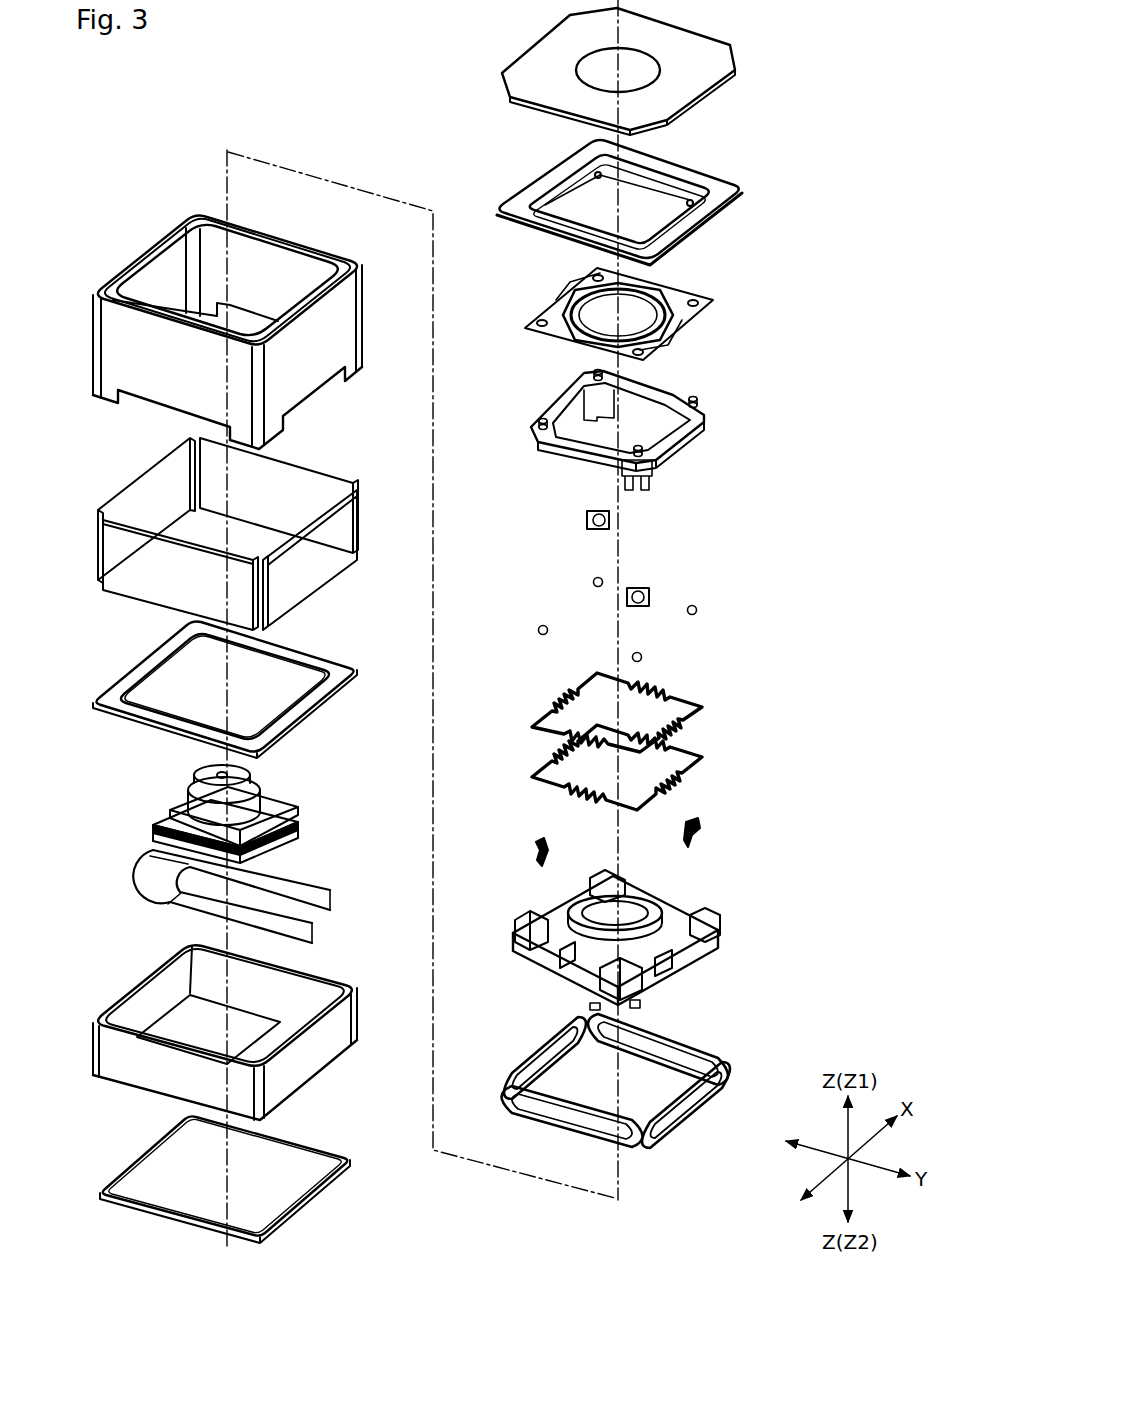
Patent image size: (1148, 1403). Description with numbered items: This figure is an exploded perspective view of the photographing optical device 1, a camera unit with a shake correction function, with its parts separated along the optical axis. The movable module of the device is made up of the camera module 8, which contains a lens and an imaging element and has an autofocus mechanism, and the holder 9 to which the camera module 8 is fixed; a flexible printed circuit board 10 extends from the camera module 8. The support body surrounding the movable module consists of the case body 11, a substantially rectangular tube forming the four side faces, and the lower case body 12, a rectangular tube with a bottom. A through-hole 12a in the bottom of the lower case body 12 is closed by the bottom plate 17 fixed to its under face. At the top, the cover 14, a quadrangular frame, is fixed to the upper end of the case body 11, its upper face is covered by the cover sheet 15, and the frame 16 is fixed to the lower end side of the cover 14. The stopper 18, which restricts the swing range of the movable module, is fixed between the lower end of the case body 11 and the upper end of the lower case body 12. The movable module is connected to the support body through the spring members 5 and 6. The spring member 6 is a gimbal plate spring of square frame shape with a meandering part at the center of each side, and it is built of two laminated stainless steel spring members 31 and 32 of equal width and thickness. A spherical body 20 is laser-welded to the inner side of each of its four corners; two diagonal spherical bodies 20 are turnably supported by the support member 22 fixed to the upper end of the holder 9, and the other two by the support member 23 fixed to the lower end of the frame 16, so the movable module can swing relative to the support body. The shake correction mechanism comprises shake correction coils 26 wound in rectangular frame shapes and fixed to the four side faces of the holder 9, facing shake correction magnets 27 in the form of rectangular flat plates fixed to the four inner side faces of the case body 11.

The photographing optical device 1 is at (178, 131).
The spring member 5 is at (713, 300).
The spring member 6 is at (662, 741).
The camera module 8 is at (262, 782).
The holder 9 is at (721, 928).
The flexible printed circuit board 10 is at (317, 883).
The case body 11 is at (365, 318).
The lower case body 12 is at (255, 1032).
The through-hole 12a is at (166, 1022).
The cover 14 is at (740, 183).
The cover sheet 15 is at (703, 97).
The frame 16 is at (707, 410).
The bottom plate 17 is at (307, 1205).
The stopper 18 is at (358, 671).
The spherical body 20 is at (593, 583).
The support member 22 is at (531, 848).
The support member 23 is at (586, 522).
The shake correction coil 26 is at (688, 1033).
The shake correction magnet 27 is at (137, 473).
The spring member 31 is at (704, 710).
The spring member 32 is at (647, 767).